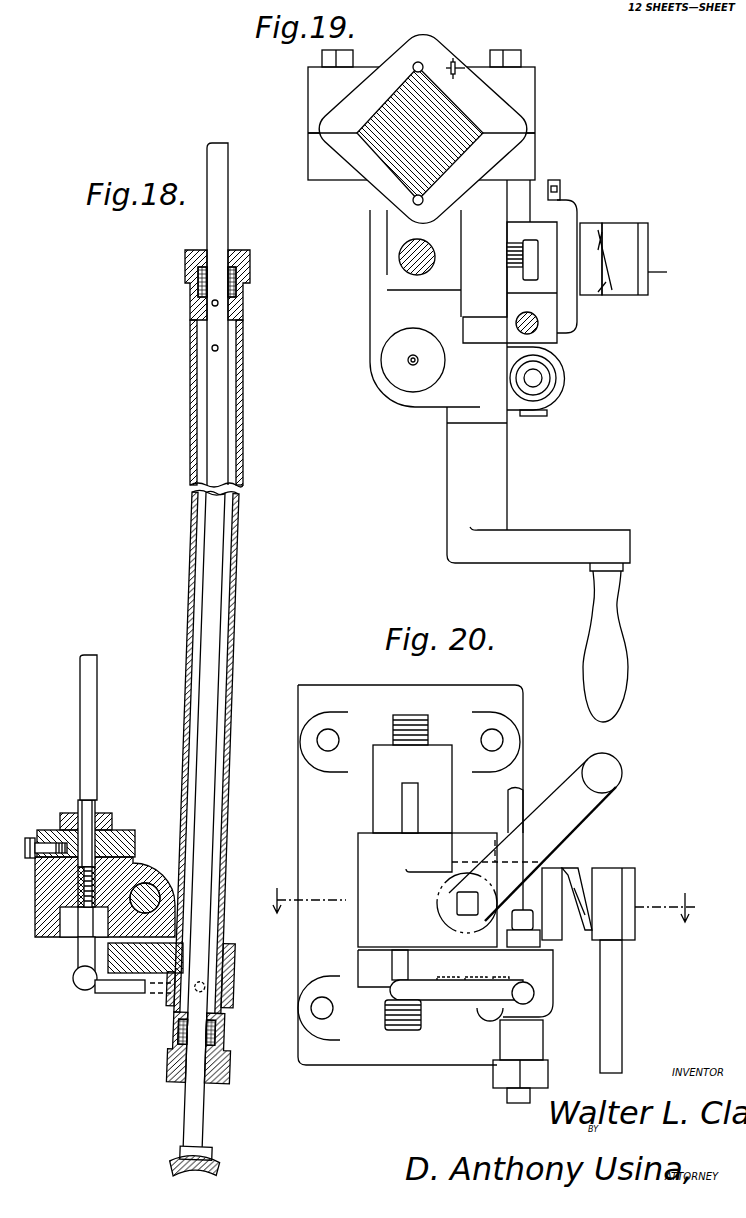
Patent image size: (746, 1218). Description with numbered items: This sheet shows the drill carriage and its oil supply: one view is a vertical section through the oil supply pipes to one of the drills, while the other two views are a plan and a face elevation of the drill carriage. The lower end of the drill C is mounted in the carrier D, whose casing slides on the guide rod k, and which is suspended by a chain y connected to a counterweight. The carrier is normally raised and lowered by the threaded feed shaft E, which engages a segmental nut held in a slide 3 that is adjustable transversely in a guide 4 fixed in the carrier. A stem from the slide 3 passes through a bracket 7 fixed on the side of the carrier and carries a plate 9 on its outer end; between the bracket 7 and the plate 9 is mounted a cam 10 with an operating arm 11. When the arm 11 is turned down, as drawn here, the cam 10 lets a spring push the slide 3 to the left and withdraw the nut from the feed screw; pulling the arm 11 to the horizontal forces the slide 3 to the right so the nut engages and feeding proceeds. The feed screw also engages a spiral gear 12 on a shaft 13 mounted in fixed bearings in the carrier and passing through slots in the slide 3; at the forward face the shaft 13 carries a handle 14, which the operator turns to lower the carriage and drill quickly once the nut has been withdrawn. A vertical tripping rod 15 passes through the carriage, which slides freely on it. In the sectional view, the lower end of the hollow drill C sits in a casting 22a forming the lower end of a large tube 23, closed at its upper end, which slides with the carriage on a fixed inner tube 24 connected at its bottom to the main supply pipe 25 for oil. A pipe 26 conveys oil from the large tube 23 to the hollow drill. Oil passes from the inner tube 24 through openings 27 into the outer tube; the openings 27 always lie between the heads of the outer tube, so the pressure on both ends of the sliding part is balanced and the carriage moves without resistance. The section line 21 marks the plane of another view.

In FIG. 19, the slide 3 is at (513, 276).
In FIG. 20, the slide 3 is at (346, 923).
In FIG. 19, the guide 4 is at (506, 214).
In FIG. 19, the bracket 7 is at (586, 231).
In FIG. 20, the bracket 7 is at (569, 876).
In FIG. 19, the plate 9 is at (665, 274).
In FIG. 19, the cam 10 is at (628, 232).
In FIG. 20, the cam 10 is at (613, 885).
In FIG. 20, the operating arm 11 is at (608, 992).
In FIG. 19, the spiral gear 12 is at (507, 255).
In FIG. 20, the shaft 13 is at (456, 902).
In FIG. 19, the handle 14 is at (543, 532).
In FIG. 20, the handle 14 is at (583, 805).
In FIG. 19, the tripping rod 15 is at (540, 321).
In FIG. 20, the tripping rod 15 is at (522, 790).
In FIG. 20, the section line 21 is at (484, 904).
In FIG. 18, the casting 22a is at (238, 997).
In FIG. 19, the casting 22a is at (548, 402).
In FIG. 20, the casting 22a is at (546, 985).
In FIG. 18, the large tube 23 is at (232, 606).
In FIG. 19, the large tube 23 is at (553, 388).
In FIG. 18, the inner tube 24 is at (220, 557).
In FIG. 19, the inner tube 24 is at (548, 372).
In FIG. 18, the main supply pipe 25 is at (217, 1167).
In FIG. 18, the pipe 26 is at (107, 988).
In FIG. 20, the pipe 26 is at (463, 995).
In FIG. 18, the openings 27 is at (218, 306).
In FIG. 18, the drill C is at (95, 665).
In FIG. 19, the drill C is at (409, 359).
In FIG. 20, the drill C is at (415, 812).
In FIG. 19, the carriage D is at (405, 308).
In FIG. 20, the carriage D is at (410, 875).
In FIG. 19, the threaded feed shaft E is at (398, 248).
In FIG. 20, the threaded feed shaft E is at (428, 726).
In FIG. 19, the guide rod k is at (391, 103).
In FIG. 19, the chain y is at (456, 75).